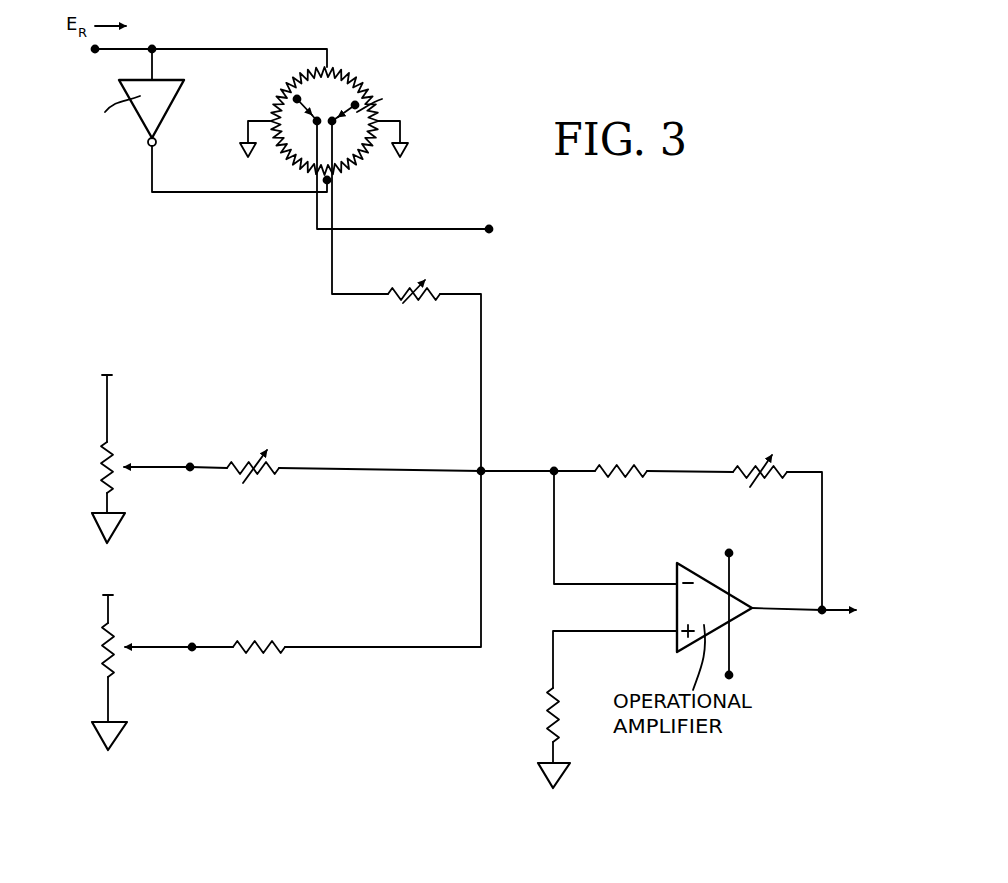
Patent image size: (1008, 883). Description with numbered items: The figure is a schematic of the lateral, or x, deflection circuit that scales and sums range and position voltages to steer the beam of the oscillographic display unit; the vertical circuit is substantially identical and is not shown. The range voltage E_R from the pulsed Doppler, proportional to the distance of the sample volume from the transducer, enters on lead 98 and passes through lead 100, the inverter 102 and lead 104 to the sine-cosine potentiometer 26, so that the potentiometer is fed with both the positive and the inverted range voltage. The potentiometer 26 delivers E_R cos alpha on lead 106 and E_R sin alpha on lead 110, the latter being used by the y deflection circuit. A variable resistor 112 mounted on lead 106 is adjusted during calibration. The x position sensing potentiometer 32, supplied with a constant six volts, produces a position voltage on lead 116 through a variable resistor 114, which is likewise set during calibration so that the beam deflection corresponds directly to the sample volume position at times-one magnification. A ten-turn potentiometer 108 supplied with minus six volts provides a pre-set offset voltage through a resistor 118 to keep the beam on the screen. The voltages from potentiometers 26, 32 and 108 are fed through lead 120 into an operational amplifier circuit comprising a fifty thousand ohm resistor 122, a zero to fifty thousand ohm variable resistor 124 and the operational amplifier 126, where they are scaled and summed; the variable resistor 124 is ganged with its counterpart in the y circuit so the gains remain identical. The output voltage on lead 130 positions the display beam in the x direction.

The lead 98 is at (297, 49).
The lead 100 is at (153, 58).
The inverter 102 is at (184, 100).
The lead 104 is at (185, 192).
The sine-cosine potentiometer 26 is at (362, 152).
The lead 106 is at (333, 254).
The lead 110 is at (455, 229).
The variable resistor 112 is at (408, 300).
The x position sensing potentiometer 32 is at (102, 450).
The lead 116 is at (213, 465).
The variable resistor 114 is at (268, 481).
The offset potentiometer 108 is at (105, 628).
The resistor 118 is at (278, 642).
The lead 120 is at (515, 471).
The resistor 122 is at (626, 466).
The variable resistor 124 is at (752, 465).
The operational amplifier 126 is at (687, 566).
The lead 130 is at (835, 617).